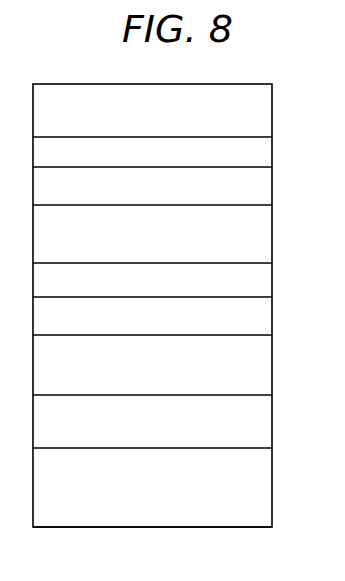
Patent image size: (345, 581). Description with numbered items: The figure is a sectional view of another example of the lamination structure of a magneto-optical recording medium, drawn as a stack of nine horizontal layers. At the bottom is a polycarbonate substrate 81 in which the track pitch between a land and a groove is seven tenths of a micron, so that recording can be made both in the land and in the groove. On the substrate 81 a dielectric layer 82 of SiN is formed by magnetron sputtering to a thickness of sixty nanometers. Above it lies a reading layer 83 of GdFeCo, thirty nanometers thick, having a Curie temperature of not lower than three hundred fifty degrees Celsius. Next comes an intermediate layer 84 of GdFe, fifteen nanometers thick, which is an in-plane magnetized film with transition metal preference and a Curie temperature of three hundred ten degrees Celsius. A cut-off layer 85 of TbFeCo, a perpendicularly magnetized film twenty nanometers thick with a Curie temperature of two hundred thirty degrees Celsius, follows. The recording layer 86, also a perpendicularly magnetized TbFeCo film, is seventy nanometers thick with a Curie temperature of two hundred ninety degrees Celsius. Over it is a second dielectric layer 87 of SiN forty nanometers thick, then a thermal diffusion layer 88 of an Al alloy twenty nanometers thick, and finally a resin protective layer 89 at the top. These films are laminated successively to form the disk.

The substrate 81 is at (176, 503).
The dielectric layer 82 is at (176, 430).
The reading layer 83 is at (176, 377).
The intermediate layer 84 is at (176, 323).
The cut-off layer 85 is at (176, 286).
The recording layer 86 is at (176, 245).
The dielectric layer 87 is at (176, 193).
The thermal diffusion layer 88 is at (176, 156).
The resin protective layer 89 is at (176, 119).